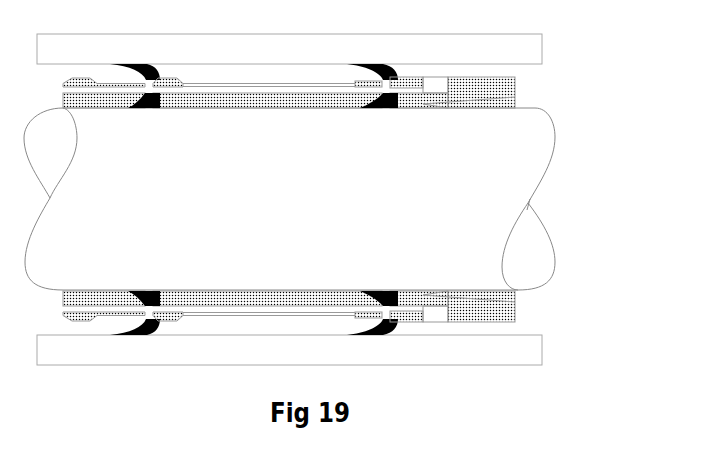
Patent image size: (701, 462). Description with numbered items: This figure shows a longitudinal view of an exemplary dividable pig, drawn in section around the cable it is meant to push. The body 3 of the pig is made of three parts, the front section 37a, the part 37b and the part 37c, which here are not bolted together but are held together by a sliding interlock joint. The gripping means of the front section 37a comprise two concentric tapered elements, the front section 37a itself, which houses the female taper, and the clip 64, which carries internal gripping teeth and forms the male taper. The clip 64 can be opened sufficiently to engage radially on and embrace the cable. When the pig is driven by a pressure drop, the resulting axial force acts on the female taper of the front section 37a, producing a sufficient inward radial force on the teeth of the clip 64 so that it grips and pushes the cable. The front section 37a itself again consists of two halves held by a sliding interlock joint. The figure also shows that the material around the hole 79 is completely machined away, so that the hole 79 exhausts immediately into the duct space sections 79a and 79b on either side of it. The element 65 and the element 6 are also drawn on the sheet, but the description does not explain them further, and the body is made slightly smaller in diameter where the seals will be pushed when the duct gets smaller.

The body 3 is at (309, 210).
The rod 6 is at (513, 113).
The front section 37a is at (435, 101).
The body part 37b is at (192, 97).
The body part 37c is at (92, 97).
The hole 79 is at (347, 89).
The duct space section 79a is at (250, 86).
The duct space section 79b is at (435, 82).
The clip 64 is at (515, 97).
The block 65 is at (512, 77).